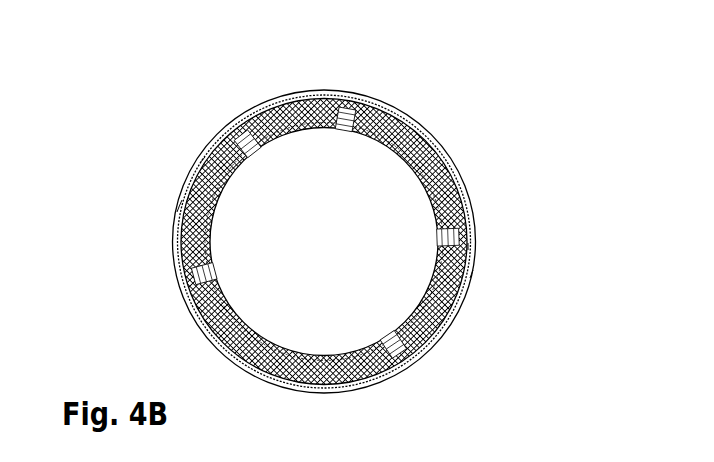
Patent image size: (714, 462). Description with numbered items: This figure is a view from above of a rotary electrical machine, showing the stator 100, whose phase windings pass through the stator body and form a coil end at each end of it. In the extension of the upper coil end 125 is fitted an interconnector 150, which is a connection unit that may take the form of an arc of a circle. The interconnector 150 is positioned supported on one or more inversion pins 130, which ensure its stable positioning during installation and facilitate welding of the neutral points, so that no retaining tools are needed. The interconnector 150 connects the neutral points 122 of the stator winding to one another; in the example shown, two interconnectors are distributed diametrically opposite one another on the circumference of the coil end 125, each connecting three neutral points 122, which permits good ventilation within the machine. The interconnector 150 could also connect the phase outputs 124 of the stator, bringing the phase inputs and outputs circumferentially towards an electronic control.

The stator 100 is at (445, 138).
The upper coil end 125 is at (393, 113).
The inversion pins 130 is at (452, 199).
The neutral points 122 is at (220, 141).
The interconnector 150 is at (197, 164).
The phase outputs 124 is at (175, 211).